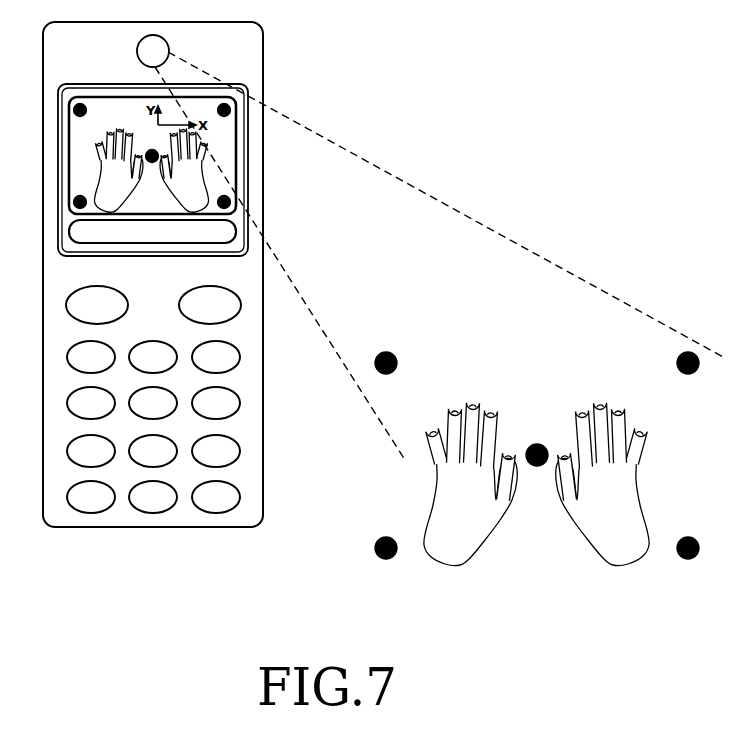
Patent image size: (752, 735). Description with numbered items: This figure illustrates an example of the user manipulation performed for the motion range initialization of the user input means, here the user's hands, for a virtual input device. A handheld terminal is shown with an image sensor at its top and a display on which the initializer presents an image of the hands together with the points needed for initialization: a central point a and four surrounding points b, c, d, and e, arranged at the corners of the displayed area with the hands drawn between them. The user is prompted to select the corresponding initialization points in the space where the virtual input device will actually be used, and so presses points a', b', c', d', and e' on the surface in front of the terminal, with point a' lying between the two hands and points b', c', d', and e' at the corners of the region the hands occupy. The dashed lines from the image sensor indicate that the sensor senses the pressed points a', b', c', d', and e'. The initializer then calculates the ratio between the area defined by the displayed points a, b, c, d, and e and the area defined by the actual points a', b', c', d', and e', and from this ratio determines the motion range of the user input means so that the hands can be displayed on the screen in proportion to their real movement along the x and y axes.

The point a is at (152, 164).
The point b is at (86, 110).
The point c is at (85, 202).
The point d is at (220, 202).
The point e is at (220, 110).
The point a' is at (537, 469).
The point b' is at (400, 364).
The point c' is at (399, 549).
The point d' is at (678, 549).
The point e' is at (678, 364).